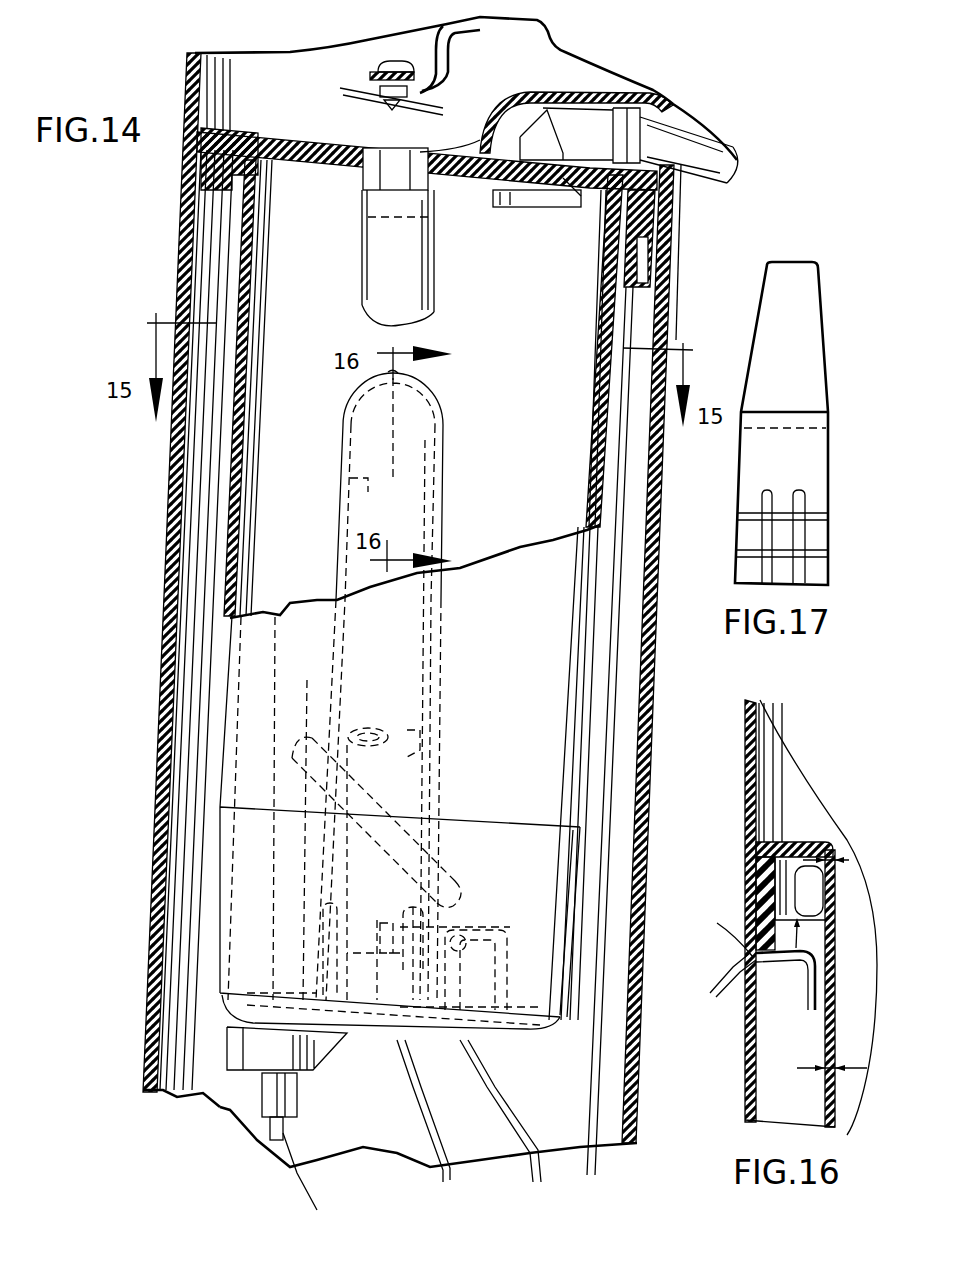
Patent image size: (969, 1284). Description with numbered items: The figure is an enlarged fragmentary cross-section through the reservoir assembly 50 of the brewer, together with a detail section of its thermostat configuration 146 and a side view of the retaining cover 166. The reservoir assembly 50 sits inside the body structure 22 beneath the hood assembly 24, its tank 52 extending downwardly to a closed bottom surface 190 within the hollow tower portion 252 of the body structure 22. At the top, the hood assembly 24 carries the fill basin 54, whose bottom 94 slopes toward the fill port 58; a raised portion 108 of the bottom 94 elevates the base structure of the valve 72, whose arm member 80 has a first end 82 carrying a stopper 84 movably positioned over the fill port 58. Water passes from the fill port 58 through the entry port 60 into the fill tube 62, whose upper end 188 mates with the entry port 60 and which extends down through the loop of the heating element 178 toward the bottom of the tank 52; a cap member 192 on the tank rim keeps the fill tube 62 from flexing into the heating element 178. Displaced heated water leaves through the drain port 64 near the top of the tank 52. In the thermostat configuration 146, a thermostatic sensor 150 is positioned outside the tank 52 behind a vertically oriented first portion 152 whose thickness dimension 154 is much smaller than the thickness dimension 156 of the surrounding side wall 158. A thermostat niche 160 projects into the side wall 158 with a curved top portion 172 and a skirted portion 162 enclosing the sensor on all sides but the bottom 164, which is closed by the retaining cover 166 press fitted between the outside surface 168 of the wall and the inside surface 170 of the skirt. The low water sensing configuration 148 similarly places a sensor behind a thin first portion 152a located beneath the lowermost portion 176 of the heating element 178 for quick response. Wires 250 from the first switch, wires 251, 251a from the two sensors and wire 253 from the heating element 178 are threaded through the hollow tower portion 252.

In FIG. 14, the body structure 22 is at (134, 885).
In FIG. 14, the hood assembly 24 is at (173, 71).
In FIG. 14, the reservoir assembly 50 is at (213, 425).
In FIG. 14, the tank 52 is at (233, 462).
In FIG. 16, the tank 52 is at (745, 1073).
In FIG. 14, the fill basin 54 is at (182, 58).
In FIG. 14, the fill port 58 is at (397, 150).
In FIG. 14, the entry port 60 is at (433, 190).
In FIG. 14, the fill tube 62 is at (392, 478).
In FIG. 14, the drain port 64 is at (567, 200).
In FIG. 14, the valve 72 is at (367, 40).
In FIG. 14, the arm member 80 is at (390, 43).
In FIG. 14, the first end 82 is at (370, 68).
In FIG. 14, the stopper 84 is at (343, 90).
In FIG. 14, the bottom 94 is at (287, 133).
In FIG. 14, the raised portion 108 is at (483, 140).
In FIG. 14, the thermostat configuration 146 is at (458, 415).
In FIG. 16, the thermostat configuration 146 is at (728, 886).
In FIG. 14, the low water sensing configuration 148 is at (497, 840).
In FIG. 16, the thermostatic sensor 150 is at (756, 845).
In FIG. 14, the first portion 152 is at (353, 685).
In FIG. 16, the first portion 152 is at (838, 892).
In FIG. 14, the first portion 152a is at (492, 920).
In FIG. 16, the thickness dimension 154 is at (833, 845).
In FIG. 16, the thickness dimension 156 is at (827, 1057).
In FIG. 14, the side wall 158 is at (590, 473).
In FIG. 16, the side wall 158 is at (835, 1113).
In FIG. 16, the thermostat niche 160 is at (795, 950).
In FIG. 14, the skirted portion 162 is at (345, 487).
In FIG. 16, the skirted portion 162 is at (743, 907).
In FIG. 16, the bottom 164 is at (715, 937).
In FIG. 17, the retaining cover 166 is at (773, 353).
In FIG. 16, the retaining cover 166 is at (746, 1020).
In FIG. 16, the outside surface 168 is at (823, 1037).
In FIG. 16, the inside surface 170 is at (758, 863).
In FIG. 14, the top portion 172 is at (393, 370).
In FIG. 16, the top portion 172 is at (783, 840).
In FIG. 14, the lowermost portion 176 is at (375, 793).
In FIG. 14, the heating element 178 is at (290, 727).
In FIG. 14, the upper end 188 is at (360, 197).
In FIG. 14, the bottom surface 190 is at (527, 1053).
In FIG. 14, the cap member 192 is at (223, 77).
In FIG. 14, the wires 250 is at (636, 692).
In FIG. 14, the wire 251 is at (455, 1155).
In FIG. 16, the wire 251 is at (717, 977).
In FIG. 14, the wire 251a is at (543, 1170).
In FIG. 14, the hollow tower portion 252 is at (150, 951).
In FIG. 14, the wire 253 is at (303, 1183).